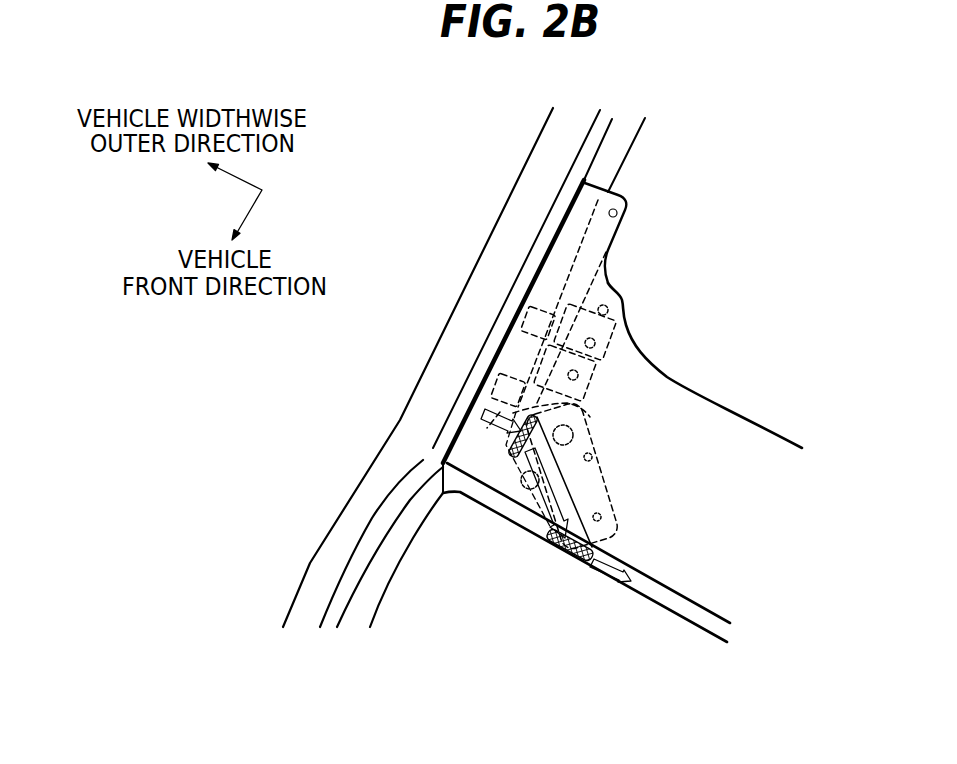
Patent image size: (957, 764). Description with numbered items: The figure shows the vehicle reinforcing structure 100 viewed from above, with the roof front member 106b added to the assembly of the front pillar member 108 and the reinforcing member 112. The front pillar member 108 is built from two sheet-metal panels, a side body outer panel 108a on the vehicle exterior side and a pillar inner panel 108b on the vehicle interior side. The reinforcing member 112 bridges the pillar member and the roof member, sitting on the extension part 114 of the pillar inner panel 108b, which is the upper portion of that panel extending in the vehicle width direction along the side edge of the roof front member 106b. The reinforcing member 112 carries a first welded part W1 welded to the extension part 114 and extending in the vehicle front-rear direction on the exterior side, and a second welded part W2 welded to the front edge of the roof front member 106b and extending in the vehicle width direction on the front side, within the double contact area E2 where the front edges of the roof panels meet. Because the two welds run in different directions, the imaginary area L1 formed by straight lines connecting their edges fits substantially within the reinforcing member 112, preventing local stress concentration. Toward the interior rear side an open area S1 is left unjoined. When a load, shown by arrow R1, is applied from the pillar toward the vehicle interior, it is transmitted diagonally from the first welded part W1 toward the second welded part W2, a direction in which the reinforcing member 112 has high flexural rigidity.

The vehicle reinforcing structure 100 is at (437, 179).
The front pillar member 108 is at (750, 155).
The side body outer panel 108a is at (618, 145).
The pillar inner panel 108b is at (617, 230).
The roof front member 106b is at (757, 435).
The load arrow R1 is at (480, 402).
The first welded part W1 is at (513, 438).
The imaginary area L1 is at (600, 423).
The open area S1 is at (608, 443).
The reinforcing member 112 is at (487, 428).
The extension part 114 is at (486, 432).
The double contact area E2 is at (655, 592).
The second welded part W2 is at (575, 560).